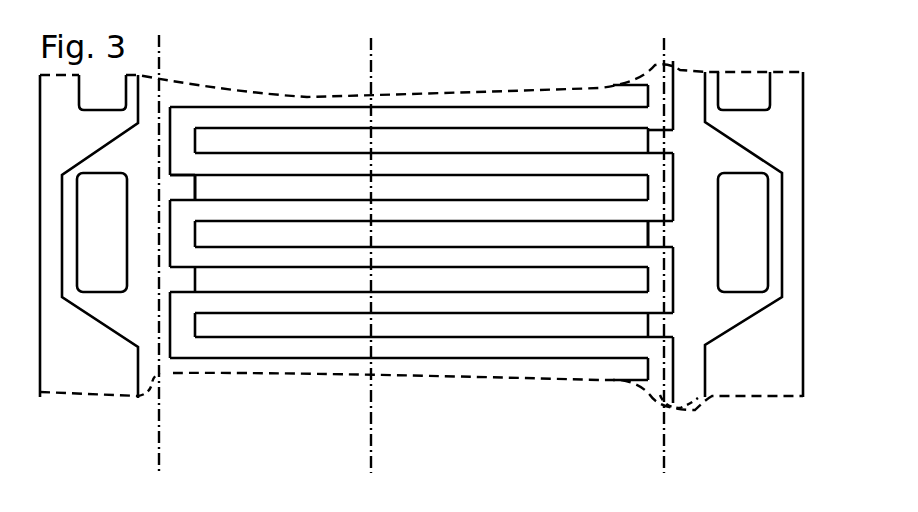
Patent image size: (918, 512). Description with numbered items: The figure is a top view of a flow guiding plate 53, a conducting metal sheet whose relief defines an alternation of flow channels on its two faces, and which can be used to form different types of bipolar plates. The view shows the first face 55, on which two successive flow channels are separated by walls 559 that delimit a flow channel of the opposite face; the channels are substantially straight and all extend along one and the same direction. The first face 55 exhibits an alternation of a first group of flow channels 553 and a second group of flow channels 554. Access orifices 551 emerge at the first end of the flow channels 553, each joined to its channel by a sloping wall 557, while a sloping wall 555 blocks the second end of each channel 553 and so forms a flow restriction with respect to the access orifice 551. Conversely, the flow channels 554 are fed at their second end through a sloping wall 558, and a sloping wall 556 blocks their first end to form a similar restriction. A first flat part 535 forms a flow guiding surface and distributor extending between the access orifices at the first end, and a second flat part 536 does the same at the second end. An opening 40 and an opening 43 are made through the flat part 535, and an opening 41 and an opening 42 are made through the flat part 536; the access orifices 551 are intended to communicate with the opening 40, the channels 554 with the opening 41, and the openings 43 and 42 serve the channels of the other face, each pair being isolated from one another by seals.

The opening 40 is at (102, 232).
The opening 41 is at (743, 232).
The opening 42 is at (744, 91).
The opening 43 is at (102, 92).
The flow guiding plate 53 is at (594, 451).
The first flat part 535 is at (147, 374).
The second flat part 536 is at (687, 396).
The first face 55 is at (273, 363).
The access orifices 551 is at (178, 192).
The first group of flow channels 553 is at (302, 285).
The second group of flow channels 554 is at (398, 322).
The sloping wall 555 is at (673, 370).
The sloping wall 556 is at (182, 326).
The sloping wall 557 is at (195, 192).
The sloping wall 558 is at (647, 235).
The walls 559 is at (500, 305).